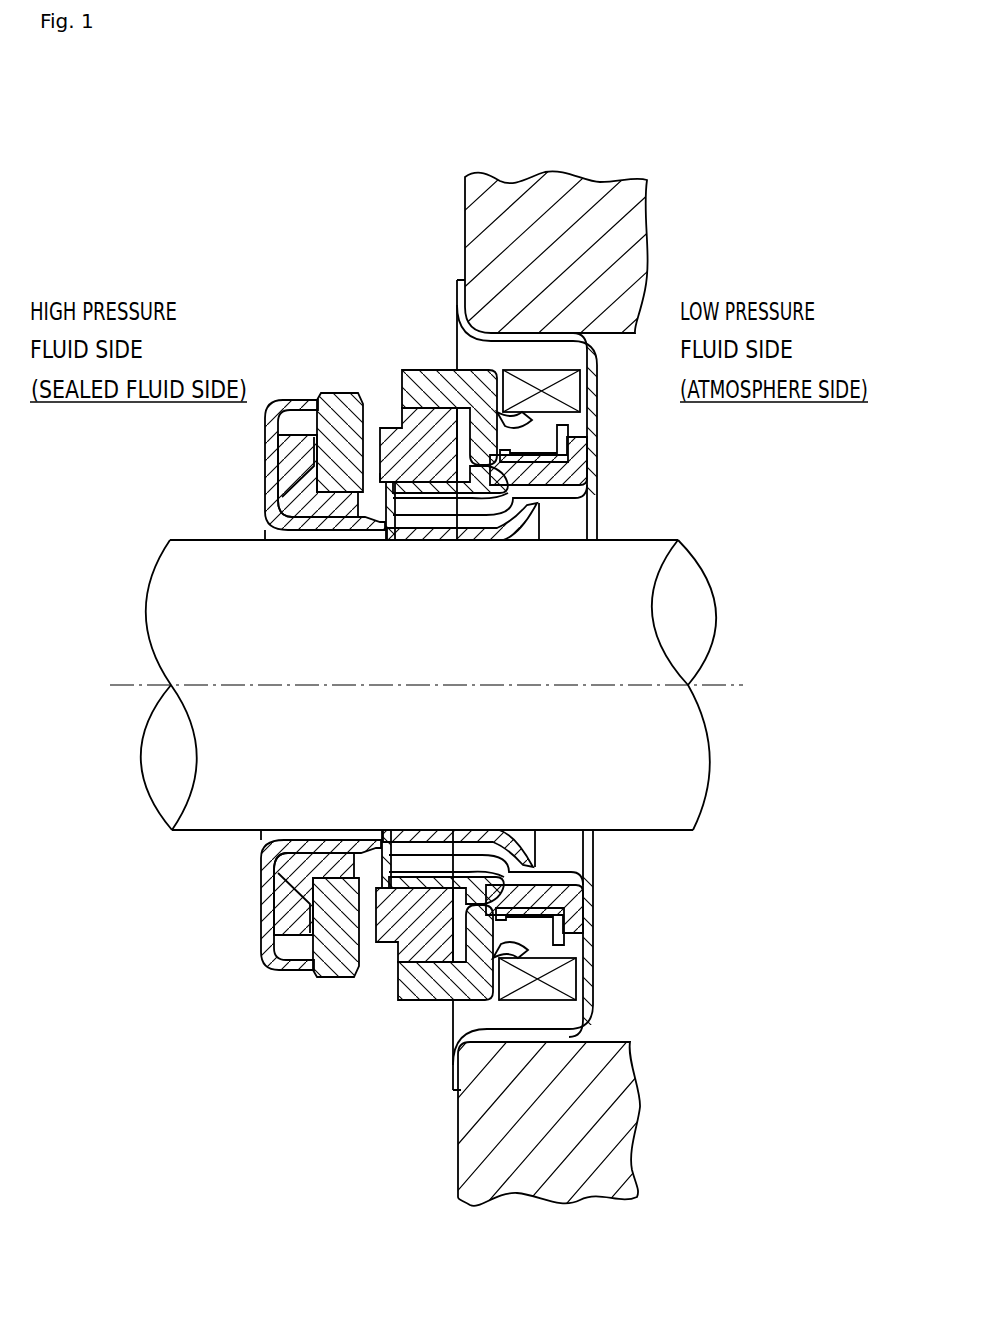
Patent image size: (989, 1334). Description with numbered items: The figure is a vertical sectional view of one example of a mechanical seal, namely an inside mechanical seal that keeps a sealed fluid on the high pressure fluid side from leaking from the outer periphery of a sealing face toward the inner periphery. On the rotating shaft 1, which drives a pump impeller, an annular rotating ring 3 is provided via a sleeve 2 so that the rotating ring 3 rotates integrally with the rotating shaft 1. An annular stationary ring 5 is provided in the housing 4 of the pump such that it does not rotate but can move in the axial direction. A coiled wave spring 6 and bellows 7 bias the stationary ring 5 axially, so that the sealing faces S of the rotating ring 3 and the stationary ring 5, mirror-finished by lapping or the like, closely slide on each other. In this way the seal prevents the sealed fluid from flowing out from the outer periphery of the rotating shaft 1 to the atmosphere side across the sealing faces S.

The rotating shaft 1 is at (271, 650).
The sleeve 2 is at (265, 497).
The rotating ring 3 is at (318, 398).
The housing 4 is at (545, 203).
The stationary ring 5 is at (413, 430).
The coiled wave spring 6 is at (575, 397).
The bellows 7 is at (462, 395).
The sealing faces S is at (380, 473).